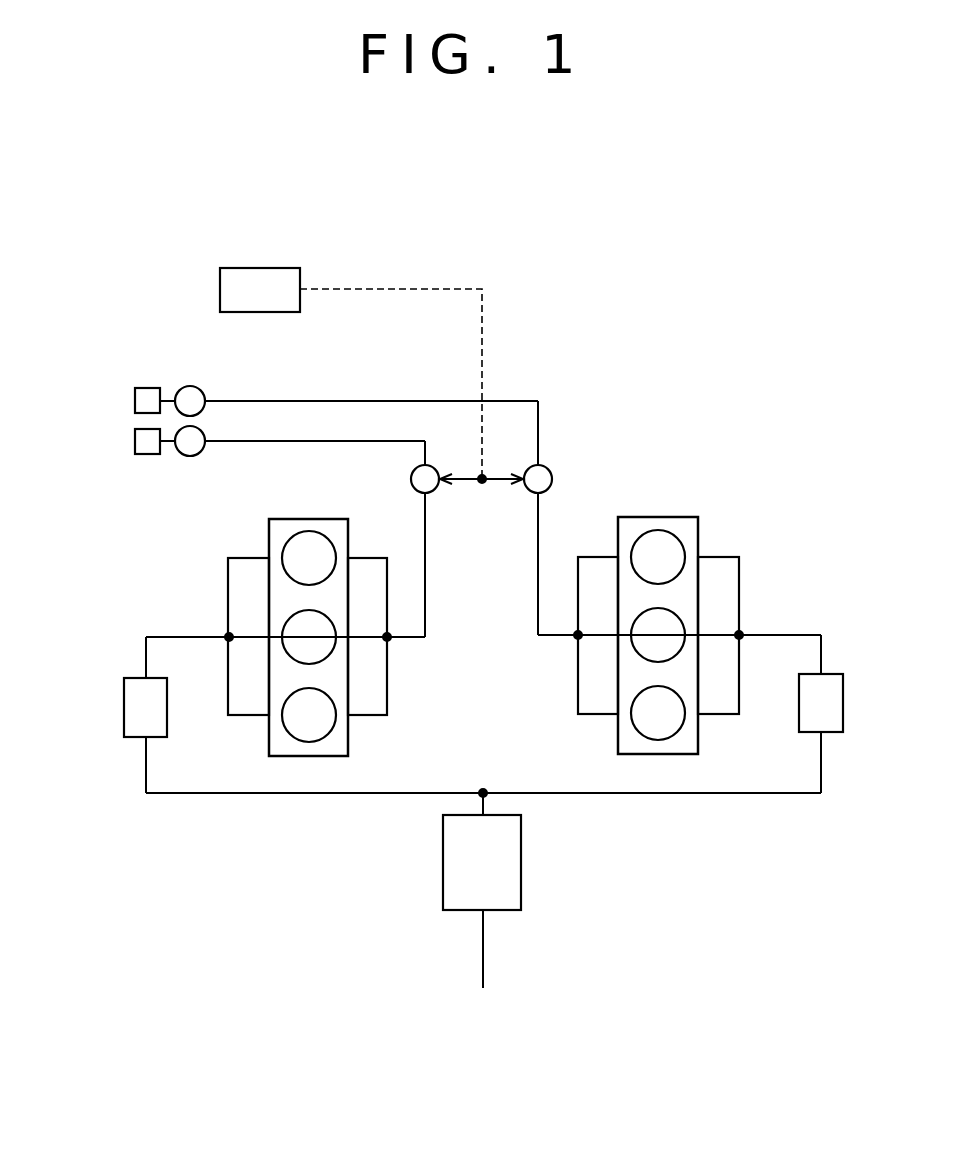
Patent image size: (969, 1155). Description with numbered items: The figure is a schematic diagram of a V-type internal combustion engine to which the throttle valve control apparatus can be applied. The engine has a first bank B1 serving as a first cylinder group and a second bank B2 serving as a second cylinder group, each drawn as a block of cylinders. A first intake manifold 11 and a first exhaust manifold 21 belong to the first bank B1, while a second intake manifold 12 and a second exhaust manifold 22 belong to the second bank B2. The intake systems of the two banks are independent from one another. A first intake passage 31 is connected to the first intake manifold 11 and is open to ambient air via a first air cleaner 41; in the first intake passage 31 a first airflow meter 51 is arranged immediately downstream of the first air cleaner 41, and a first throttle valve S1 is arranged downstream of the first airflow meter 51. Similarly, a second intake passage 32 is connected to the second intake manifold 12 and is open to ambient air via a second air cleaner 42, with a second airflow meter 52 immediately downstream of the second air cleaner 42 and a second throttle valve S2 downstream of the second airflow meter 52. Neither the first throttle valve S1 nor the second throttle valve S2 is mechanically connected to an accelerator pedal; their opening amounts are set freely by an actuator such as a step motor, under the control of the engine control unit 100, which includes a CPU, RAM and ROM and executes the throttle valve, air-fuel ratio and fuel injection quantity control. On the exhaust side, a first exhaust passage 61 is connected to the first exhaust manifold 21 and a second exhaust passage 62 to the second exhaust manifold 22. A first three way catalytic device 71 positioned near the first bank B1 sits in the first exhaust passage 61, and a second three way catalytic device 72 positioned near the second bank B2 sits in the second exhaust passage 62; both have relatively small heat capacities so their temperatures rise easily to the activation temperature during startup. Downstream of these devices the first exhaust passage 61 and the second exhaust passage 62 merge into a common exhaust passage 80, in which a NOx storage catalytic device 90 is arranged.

The engine control unit 100 is at (260, 268).
The first air cleaner 41 is at (143, 388).
The second air cleaner 42 is at (143, 455).
The first airflow meter 51 is at (188, 387).
The second airflow meter 52 is at (188, 457).
The first intake passage 31 is at (538, 425).
The second intake passage 32 is at (308, 443).
The first throttle valve S1 is at (552, 471).
The second throttle valve S2 is at (417, 487).
The first bank B1 is at (681, 506).
The second bank B2 is at (301, 511).
The first intake manifold 11 is at (600, 556).
The first exhaust manifold 21 is at (740, 590).
The second intake manifold 12 is at (369, 557).
The second exhaust manifold 22 is at (228, 587).
The first exhaust passage 61 is at (800, 635).
The second exhaust passage 62 is at (146, 660).
The first three way catalytic device 71 is at (830, 701).
The second three way catalytic device 72 is at (140, 703).
The NOx storage catalytic device 90 is at (502, 860).
The common exhaust passage 80 is at (484, 943).